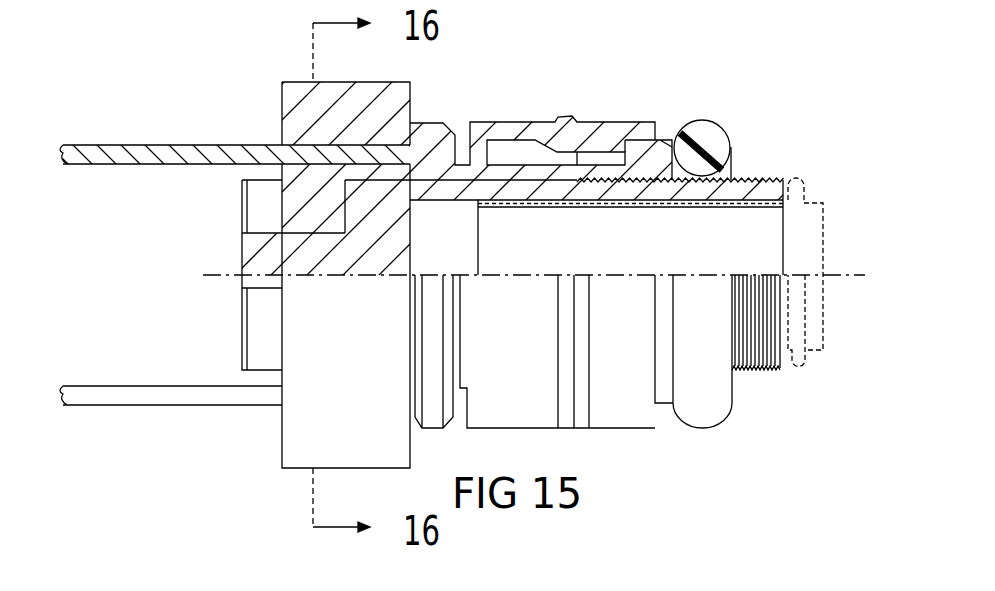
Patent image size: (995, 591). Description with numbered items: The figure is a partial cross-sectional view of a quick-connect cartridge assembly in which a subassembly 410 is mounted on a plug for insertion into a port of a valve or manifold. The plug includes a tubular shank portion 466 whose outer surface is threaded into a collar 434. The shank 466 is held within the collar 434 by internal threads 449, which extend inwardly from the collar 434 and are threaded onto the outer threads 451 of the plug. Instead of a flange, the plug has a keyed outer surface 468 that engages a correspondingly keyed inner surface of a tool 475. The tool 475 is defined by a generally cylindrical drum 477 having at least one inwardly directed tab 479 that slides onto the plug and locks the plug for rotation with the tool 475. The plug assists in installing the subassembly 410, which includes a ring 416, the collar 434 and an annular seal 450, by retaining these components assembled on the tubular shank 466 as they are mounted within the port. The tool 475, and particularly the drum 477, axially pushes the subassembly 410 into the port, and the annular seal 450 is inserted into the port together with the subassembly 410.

The subassembly 410 is at (664, 73).
The ring 416 is at (515, 117).
The collar 434 is at (665, 138).
The internal threads 449 is at (612, 183).
The annular seal 450 is at (714, 126).
The outer threads 451 is at (772, 180).
The tubular shank portion 466 is at (757, 370).
The keyed outer surface 468 is at (479, 180).
The tool 475 is at (305, 80).
The cylindrical drum 477 is at (296, 449).
The inwardly directed tab 479 is at (810, 247).